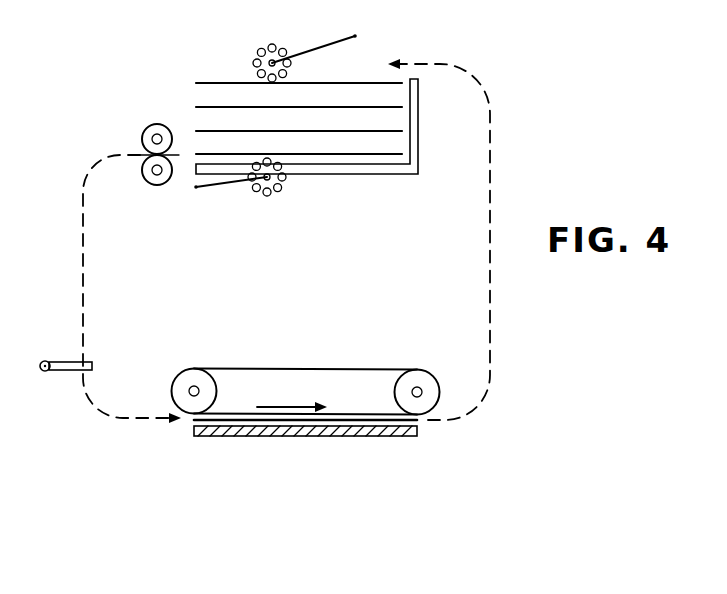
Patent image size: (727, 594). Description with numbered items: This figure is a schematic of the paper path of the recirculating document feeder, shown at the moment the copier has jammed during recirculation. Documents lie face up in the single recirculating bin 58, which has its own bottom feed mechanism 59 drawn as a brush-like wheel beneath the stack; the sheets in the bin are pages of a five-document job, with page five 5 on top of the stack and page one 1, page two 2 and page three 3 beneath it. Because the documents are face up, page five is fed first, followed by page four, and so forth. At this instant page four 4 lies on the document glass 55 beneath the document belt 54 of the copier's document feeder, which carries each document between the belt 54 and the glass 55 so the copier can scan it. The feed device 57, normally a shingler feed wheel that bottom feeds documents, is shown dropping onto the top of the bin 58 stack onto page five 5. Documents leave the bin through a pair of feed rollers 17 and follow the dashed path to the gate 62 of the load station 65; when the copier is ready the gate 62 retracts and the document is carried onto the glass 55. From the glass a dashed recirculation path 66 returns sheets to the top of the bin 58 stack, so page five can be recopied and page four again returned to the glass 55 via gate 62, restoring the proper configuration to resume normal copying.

The page one 1 is at (212, 107).
The page two 2 is at (213, 131).
The page three 3 is at (215, 154).
The page four 4 is at (240, 425).
The page five 5 is at (232, 83).
The pressure rollers 17 is at (148, 126).
The document belt 54 is at (295, 369).
The document glass 55 is at (360, 437).
The document feeder mechanism 57 is at (278, 47).
The recirculating bin 58 is at (355, 57).
The bottom feed mechanism 59 is at (275, 192).
The gate 62 is at (60, 372).
The load station 65 is at (80, 284).
The return path 66 is at (490, 164).